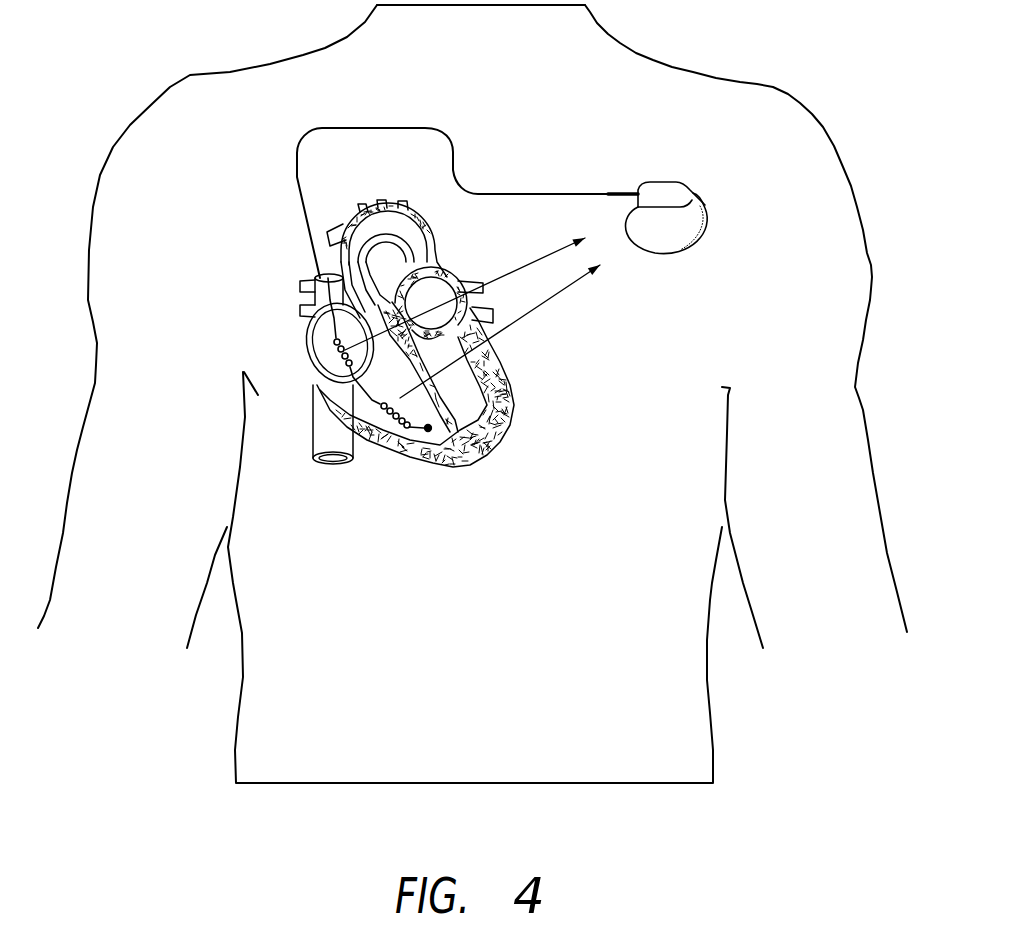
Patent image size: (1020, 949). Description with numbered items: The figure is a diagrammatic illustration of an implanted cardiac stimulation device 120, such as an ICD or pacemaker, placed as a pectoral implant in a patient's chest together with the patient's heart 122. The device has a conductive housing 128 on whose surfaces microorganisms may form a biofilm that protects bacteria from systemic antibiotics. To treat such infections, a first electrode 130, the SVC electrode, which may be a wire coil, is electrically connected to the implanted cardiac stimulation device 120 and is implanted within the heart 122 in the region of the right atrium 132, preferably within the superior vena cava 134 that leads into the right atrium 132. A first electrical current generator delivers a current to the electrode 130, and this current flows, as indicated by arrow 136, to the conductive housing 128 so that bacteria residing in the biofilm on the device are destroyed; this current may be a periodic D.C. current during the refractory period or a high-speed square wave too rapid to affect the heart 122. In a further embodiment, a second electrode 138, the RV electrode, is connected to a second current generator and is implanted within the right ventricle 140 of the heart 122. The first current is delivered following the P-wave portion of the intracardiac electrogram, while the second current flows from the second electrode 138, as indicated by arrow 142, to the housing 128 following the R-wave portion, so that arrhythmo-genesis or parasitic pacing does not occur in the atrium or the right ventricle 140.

The implanted cardiac stimulation device 120 is at (692, 187).
The heart 122 is at (450, 270).
The housing 128 is at (680, 230).
The SVC electrode 130 is at (320, 363).
The right atrium 132 is at (323, 337).
The superior vena cava 134 is at (323, 300).
The arrow 136 is at (545, 254).
The RV electrode 138 is at (377, 440).
The right ventricle 140 is at (423, 440).
The arrow 142 is at (472, 318).